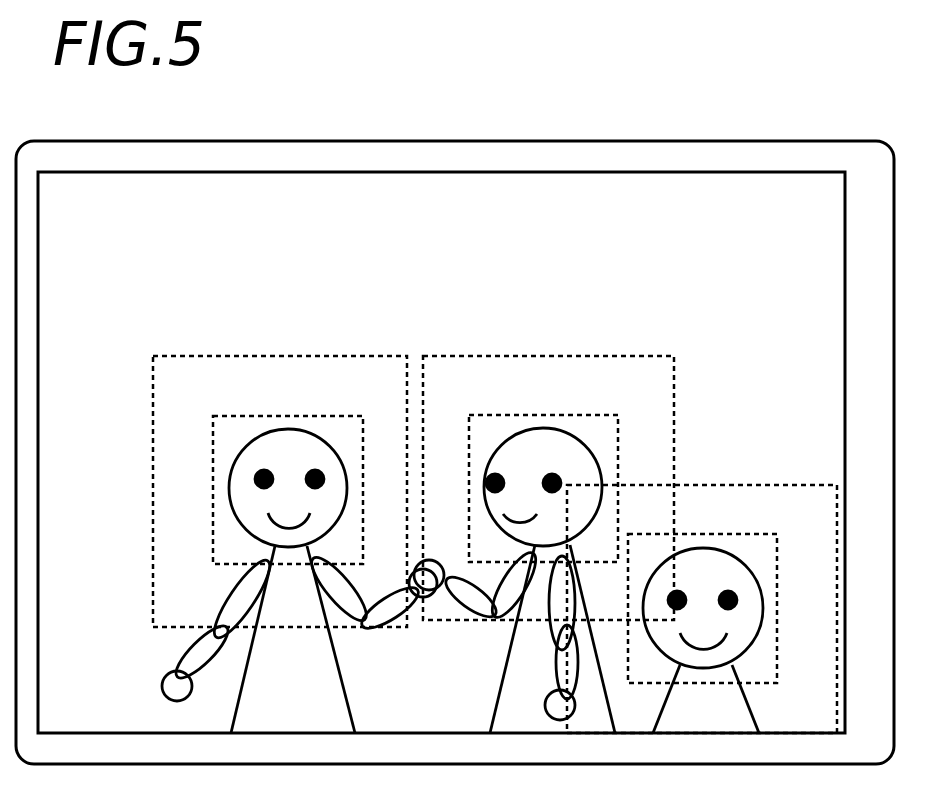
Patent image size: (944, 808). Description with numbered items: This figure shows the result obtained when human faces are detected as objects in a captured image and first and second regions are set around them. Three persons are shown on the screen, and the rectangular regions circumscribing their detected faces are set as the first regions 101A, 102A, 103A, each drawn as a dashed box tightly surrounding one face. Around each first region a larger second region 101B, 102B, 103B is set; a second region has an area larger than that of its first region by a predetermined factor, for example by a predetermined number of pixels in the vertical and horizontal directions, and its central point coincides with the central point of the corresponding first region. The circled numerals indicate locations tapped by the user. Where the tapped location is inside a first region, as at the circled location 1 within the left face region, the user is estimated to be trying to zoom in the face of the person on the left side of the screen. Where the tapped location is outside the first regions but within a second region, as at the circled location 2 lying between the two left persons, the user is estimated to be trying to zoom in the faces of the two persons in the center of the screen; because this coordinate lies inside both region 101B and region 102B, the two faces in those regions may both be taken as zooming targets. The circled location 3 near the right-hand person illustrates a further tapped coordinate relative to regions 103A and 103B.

The tapped location 1 is at (303, 581).
The tapped location 2 is at (507, 580).
The third person (subject 3) 3 is at (703, 559).
The first region 101A is at (280, 416).
The second region 101B is at (292, 357).
The first region 102A is at (540, 412).
The second region 102B is at (597, 349).
The first region 103A is at (722, 534).
The second region 103B is at (722, 485).